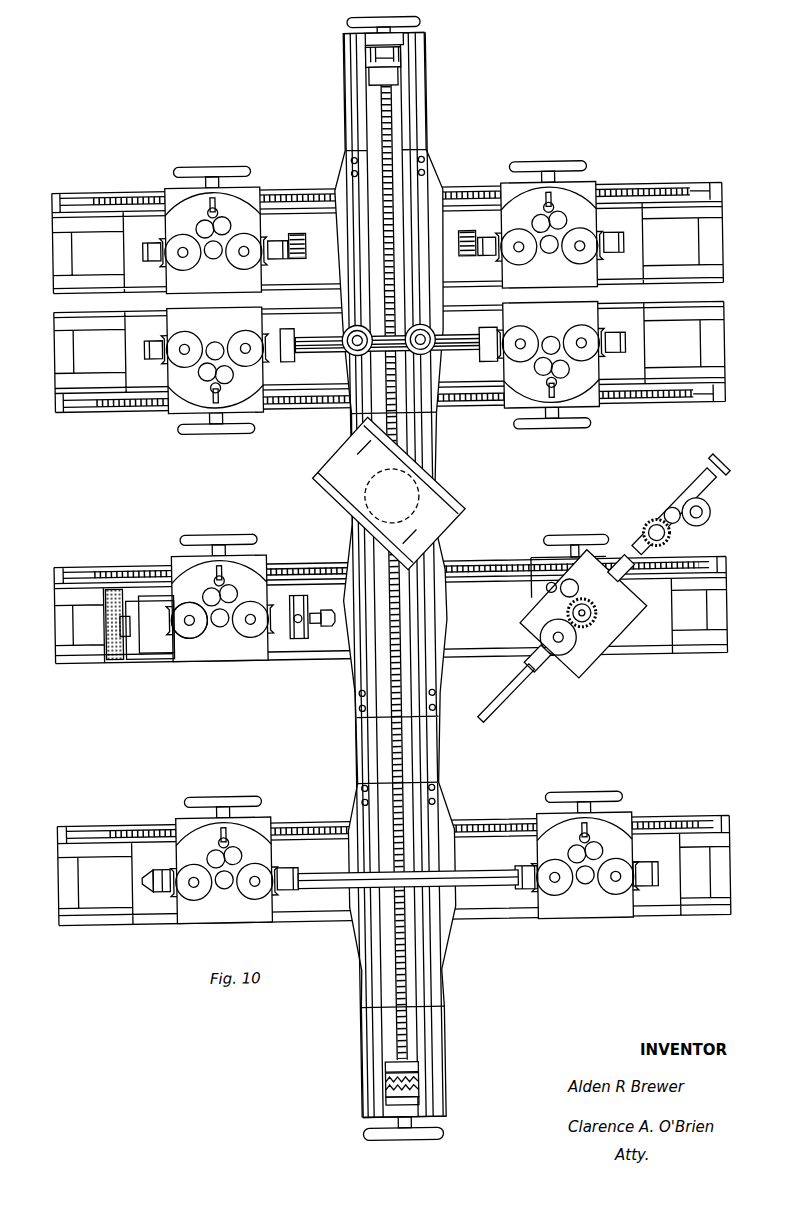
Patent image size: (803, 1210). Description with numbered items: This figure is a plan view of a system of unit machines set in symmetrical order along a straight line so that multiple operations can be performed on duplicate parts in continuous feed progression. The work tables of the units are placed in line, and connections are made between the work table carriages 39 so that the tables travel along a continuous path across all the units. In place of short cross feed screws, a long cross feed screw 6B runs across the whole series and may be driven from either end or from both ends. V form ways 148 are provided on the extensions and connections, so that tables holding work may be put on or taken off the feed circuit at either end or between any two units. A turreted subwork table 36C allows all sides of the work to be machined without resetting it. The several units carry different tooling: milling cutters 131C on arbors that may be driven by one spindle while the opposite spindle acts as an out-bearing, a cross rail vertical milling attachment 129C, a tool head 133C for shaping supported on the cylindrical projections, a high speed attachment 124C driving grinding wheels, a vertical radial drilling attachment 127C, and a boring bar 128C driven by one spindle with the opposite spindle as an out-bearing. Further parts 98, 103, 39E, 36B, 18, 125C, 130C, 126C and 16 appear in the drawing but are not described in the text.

The nut 98 is at (399, 56).
The bearing block 103 is at (397, 72).
The column guide 39E is at (413, 83).
The long cross feed screw 6B is at (392, 112).
The V form ways 148 is at (347, 68).
The work table carriages 39 is at (427, 187).
The milling cutters 131C is at (391, 253).
The cross rail vertical milling attachment 129C is at (314, 354).
The turreted subwork table 36C is at (329, 457).
The swivel plate 36B is at (421, 456).
The tool head 133C is at (285, 598).
The roller 18 is at (183, 603).
The grinding wheel 125C is at (102, 654).
The high speed attachment 124C is at (145, 648).
The vertical radial drilling attachment 127C is at (618, 551).
The tilted carriage shaft 130C is at (506, 694).
The pointer 126C is at (132, 870).
The boring bar 128C is at (446, 876).
The carriage 16 is at (576, 914).